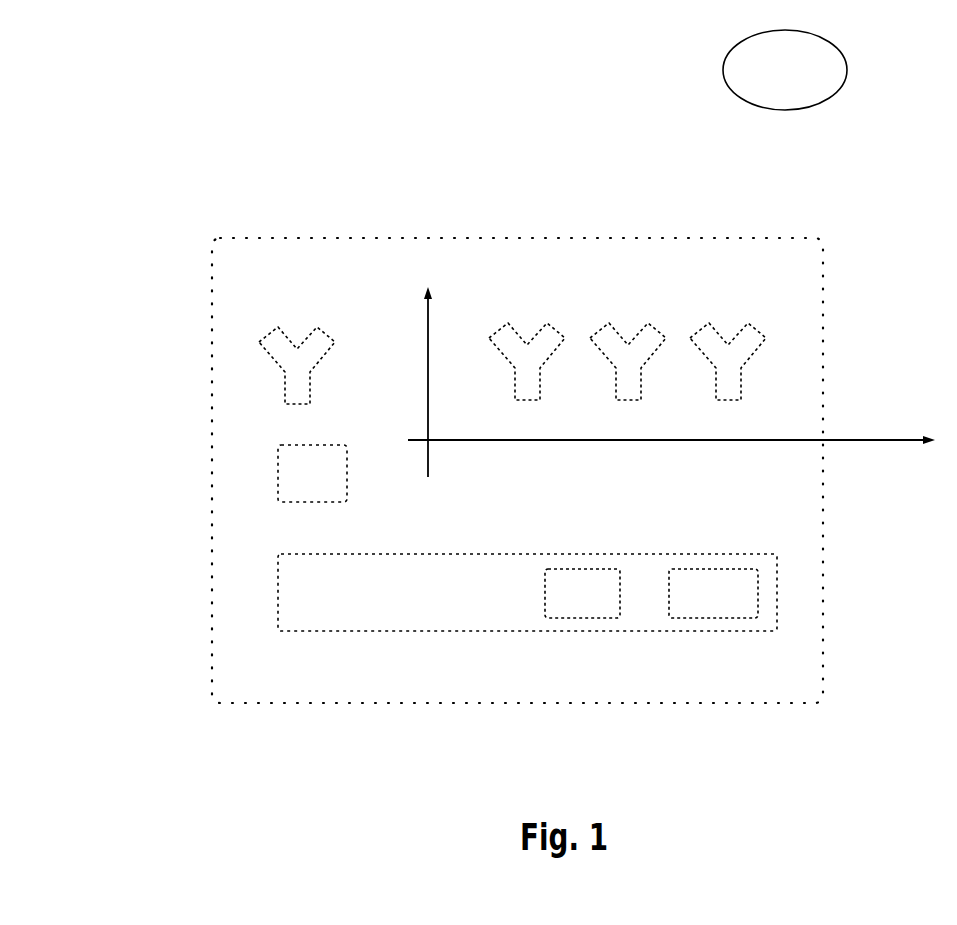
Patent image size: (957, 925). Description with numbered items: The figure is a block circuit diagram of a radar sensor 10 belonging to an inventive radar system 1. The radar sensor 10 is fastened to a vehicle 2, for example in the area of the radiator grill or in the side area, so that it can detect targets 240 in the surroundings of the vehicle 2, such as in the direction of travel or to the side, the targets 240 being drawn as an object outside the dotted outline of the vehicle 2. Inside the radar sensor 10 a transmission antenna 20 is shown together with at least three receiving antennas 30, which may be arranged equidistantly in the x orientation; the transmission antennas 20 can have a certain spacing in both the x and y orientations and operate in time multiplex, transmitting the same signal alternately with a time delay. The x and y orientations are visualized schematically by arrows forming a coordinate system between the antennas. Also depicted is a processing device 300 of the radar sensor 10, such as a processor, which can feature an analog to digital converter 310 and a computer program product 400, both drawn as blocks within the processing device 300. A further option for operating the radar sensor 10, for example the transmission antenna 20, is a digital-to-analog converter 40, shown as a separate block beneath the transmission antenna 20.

The radar system 1 is at (79, 192).
The vehicle 2 is at (212, 512).
The radar sensor 10 is at (234, 262).
The transmission antenna 20 is at (333, 341).
The receiving antennas 30 is at (760, 336).
The digital-to-analog converter 40 is at (296, 494).
The targets 240 is at (762, 83).
The processing device 300 is at (278, 610).
The analog to digital converter 310 is at (558, 610).
The computer program product 400 is at (688, 610).